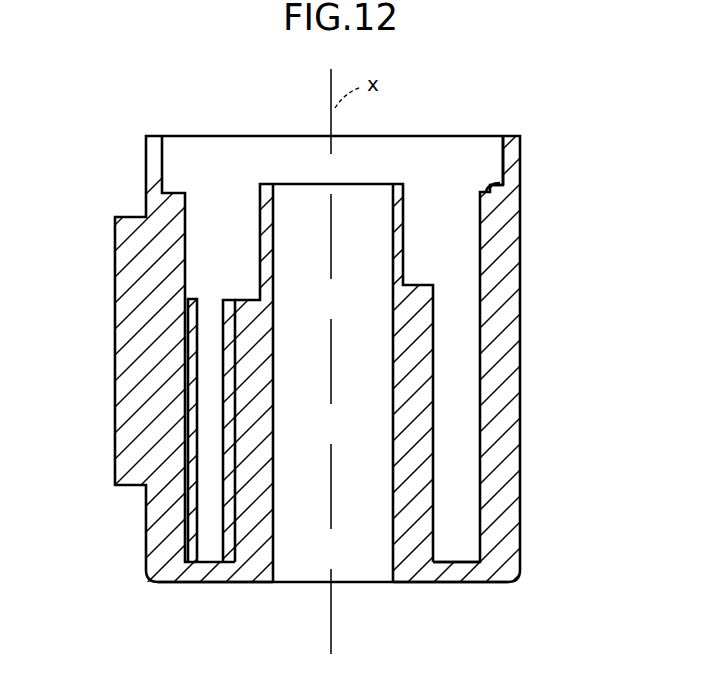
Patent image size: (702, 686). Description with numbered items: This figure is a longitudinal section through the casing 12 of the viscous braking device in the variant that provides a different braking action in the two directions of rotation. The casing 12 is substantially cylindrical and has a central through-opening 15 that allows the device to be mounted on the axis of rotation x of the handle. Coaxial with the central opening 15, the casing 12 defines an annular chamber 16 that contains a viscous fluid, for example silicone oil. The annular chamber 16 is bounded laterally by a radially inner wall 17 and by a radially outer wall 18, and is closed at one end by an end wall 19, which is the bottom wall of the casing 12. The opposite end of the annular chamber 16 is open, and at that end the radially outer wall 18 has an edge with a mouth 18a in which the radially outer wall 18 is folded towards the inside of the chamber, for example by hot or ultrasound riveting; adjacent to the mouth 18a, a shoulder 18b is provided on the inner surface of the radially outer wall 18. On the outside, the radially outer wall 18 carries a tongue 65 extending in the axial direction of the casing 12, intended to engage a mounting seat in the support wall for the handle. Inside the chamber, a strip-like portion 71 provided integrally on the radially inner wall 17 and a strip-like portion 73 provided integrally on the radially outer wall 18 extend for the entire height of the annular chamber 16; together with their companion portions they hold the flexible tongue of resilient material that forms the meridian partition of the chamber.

The casing 12 is at (580, 269).
The central through-opening 15 is at (274, 562).
The annular chamber 16 is at (470, 432).
The radially inner wall 17 is at (258, 411).
The radially outer wall 18 is at (503, 386).
The mouth 18a is at (484, 157).
The shoulder 18b is at (492, 183).
The end wall 19 is at (456, 566).
The tongue 65 is at (117, 360).
The strip-like portion 71 is at (230, 299).
The strip-like portion 73 is at (188, 298).